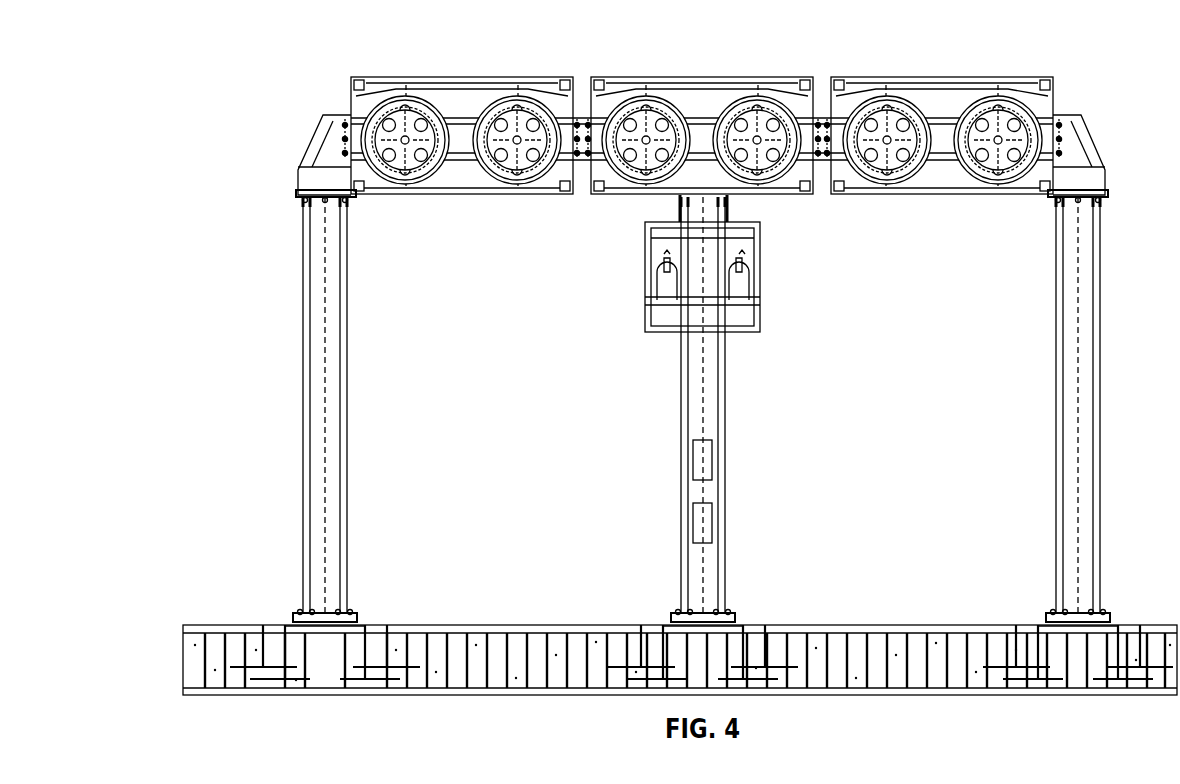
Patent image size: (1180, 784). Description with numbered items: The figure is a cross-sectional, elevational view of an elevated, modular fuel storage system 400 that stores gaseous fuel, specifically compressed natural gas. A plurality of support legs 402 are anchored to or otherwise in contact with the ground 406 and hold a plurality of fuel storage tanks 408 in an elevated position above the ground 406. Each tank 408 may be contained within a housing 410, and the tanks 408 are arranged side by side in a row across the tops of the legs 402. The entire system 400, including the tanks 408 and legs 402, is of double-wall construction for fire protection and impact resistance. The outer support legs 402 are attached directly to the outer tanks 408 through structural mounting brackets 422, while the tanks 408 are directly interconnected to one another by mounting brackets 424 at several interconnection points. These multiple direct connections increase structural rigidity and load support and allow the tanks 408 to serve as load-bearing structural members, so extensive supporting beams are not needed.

The elevated, modular fuel storage system 400 is at (1102, 70).
The support legs 402 is at (310, 432).
The ground 406 is at (920, 625).
The fuel storage tanks 408 is at (375, 102).
The housing 410 is at (428, 77).
The structural mounting brackets 422 is at (332, 150).
The mounting brackets 424 is at (588, 165).